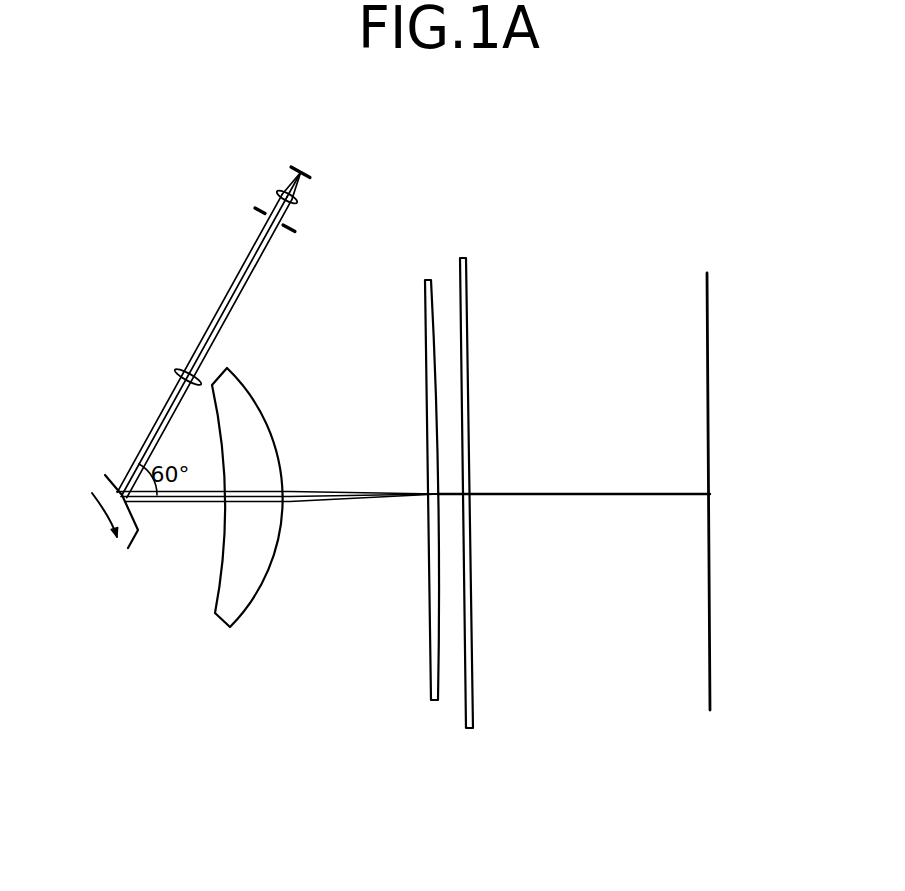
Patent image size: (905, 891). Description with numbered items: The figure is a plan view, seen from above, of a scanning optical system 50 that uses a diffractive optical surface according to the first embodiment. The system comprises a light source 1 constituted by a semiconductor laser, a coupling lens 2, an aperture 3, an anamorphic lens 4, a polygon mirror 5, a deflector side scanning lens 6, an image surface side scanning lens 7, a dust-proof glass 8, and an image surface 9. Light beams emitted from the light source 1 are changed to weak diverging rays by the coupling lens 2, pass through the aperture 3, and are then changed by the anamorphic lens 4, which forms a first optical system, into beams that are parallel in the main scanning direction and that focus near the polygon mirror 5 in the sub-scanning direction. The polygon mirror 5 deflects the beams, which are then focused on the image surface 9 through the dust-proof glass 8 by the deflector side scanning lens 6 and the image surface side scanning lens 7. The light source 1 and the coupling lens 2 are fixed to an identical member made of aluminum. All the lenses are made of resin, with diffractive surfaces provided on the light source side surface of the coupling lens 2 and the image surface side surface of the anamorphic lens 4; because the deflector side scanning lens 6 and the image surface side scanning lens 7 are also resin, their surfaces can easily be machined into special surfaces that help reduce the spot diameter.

The light source 1 is at (292, 166).
The coupling lens 2 is at (277, 188).
The aperture 3 is at (256, 208).
The anamorphic lens 4 is at (176, 371).
The polygon mirror 5 is at (105, 475).
The deflector side scanning lens 6 is at (248, 389).
The image surface side scanning lens 7 is at (425, 280).
The dust-proof glass 8 is at (460, 258).
The image surface 9 is at (708, 278).
The scanning optical system 50 is at (428, 153).